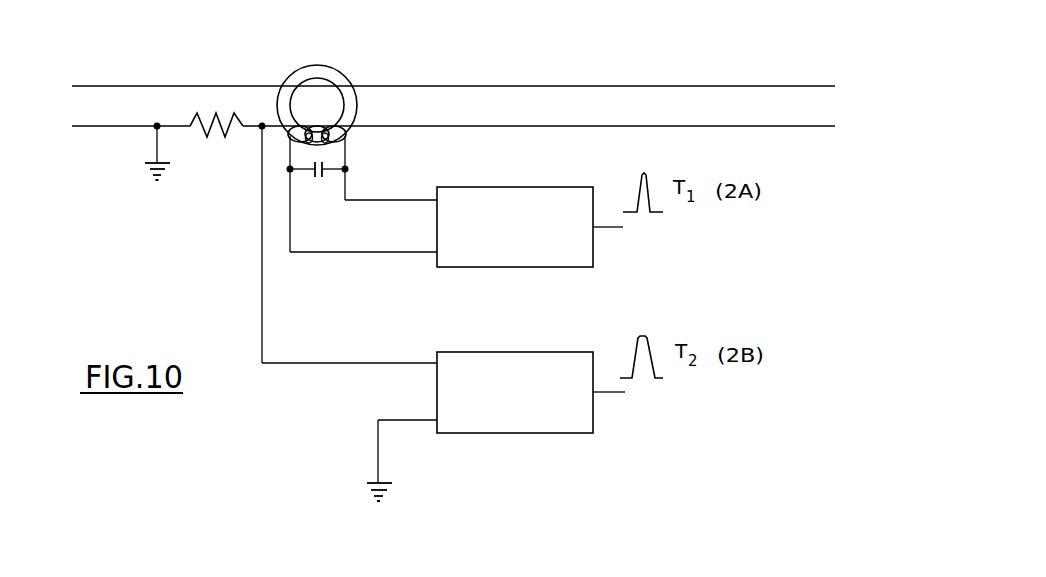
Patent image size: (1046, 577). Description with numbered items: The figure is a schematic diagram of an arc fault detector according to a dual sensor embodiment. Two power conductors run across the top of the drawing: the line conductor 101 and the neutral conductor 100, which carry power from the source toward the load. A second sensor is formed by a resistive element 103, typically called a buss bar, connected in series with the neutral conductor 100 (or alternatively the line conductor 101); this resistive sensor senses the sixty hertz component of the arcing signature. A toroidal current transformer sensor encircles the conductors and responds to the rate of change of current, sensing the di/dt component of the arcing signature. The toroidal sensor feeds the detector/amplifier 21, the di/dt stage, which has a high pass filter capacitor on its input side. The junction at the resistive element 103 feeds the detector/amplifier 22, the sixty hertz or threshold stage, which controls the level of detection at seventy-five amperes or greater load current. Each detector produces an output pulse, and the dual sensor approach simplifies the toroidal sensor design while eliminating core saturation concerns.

The neutral conductor 100 is at (116, 140).
The line conductor 101 is at (108, 78).
The resistive element 103 is at (190, 104).
The detector/amplifier 21 is at (495, 286).
The detector/amplifier 22 is at (495, 453).